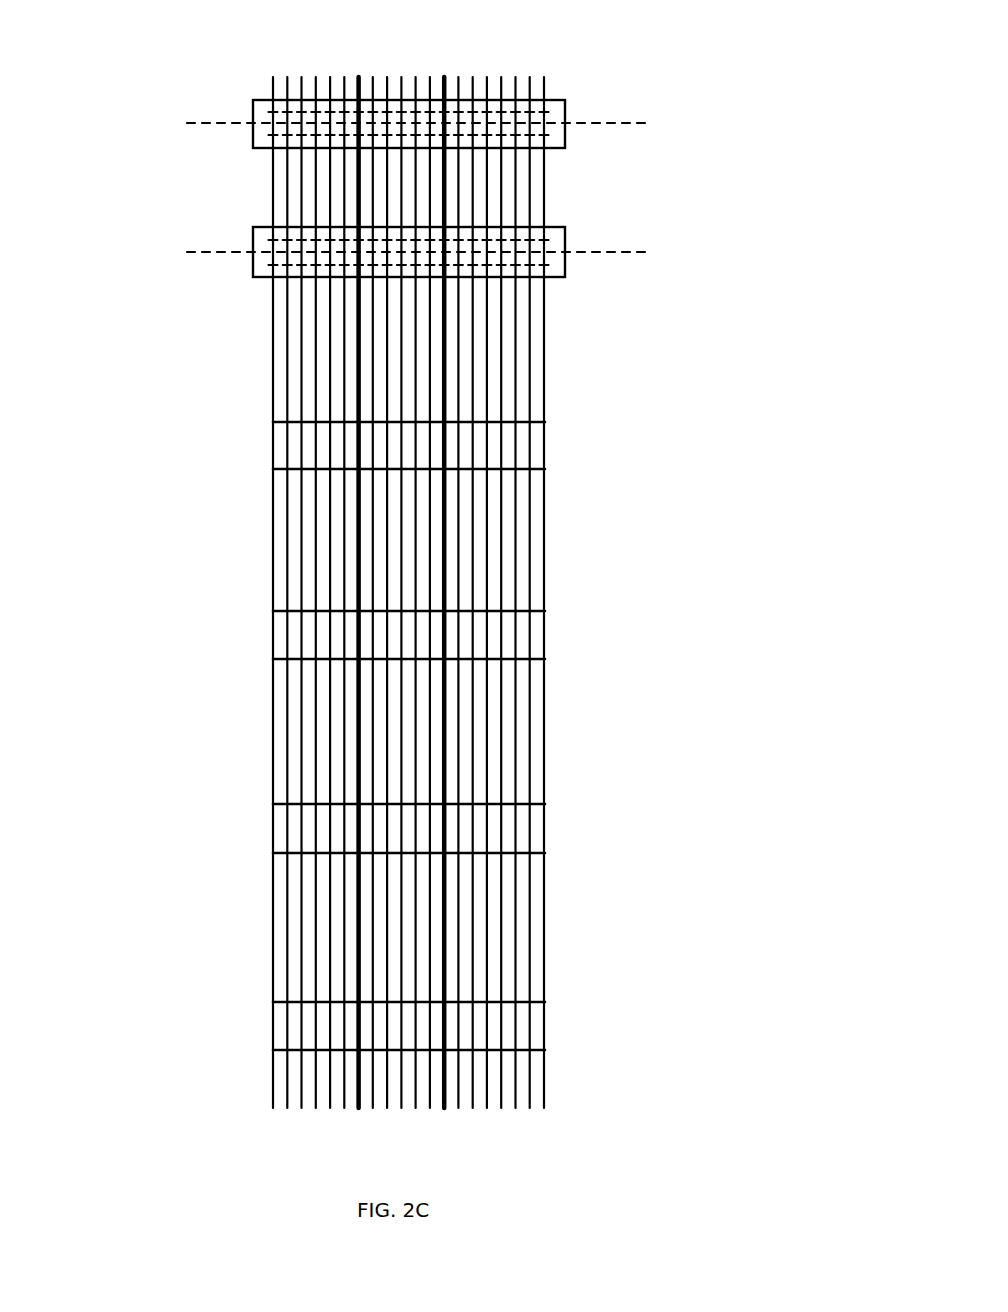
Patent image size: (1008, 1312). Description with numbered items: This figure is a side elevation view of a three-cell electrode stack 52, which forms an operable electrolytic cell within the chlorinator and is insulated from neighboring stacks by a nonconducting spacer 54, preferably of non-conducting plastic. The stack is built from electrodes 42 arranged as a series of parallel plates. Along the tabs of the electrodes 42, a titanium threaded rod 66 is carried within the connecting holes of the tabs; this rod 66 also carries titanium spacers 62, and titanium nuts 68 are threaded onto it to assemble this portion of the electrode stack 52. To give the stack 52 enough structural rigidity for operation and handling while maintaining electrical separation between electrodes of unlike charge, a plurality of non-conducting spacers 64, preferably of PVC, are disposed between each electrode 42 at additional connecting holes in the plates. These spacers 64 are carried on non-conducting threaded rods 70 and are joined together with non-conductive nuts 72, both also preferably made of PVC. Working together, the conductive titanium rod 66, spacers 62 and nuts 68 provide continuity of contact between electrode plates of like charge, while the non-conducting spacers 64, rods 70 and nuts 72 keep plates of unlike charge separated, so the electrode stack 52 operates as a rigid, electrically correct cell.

The electrode 42 is at (545, 330).
The electrode stack 52 is at (464, 564).
The nonconducting spacer 54 is at (360, 678).
The titanium spacer 62 is at (486, 100).
The non-conducting spacer 64 is at (530, 418).
The titanium threaded rod 66 is at (567, 127).
The titanium nut 68 is at (557, 148).
The non-conducting threaded rod 70 is at (357, 601).
The non-conductive nut 72 is at (258, 227).